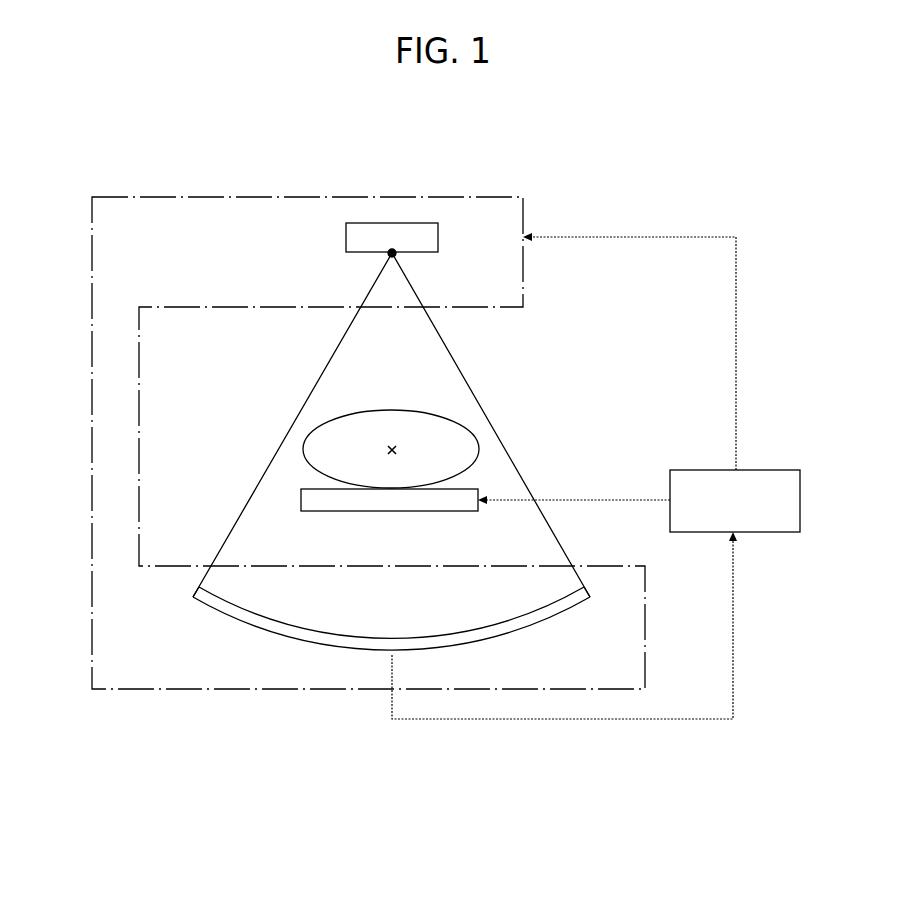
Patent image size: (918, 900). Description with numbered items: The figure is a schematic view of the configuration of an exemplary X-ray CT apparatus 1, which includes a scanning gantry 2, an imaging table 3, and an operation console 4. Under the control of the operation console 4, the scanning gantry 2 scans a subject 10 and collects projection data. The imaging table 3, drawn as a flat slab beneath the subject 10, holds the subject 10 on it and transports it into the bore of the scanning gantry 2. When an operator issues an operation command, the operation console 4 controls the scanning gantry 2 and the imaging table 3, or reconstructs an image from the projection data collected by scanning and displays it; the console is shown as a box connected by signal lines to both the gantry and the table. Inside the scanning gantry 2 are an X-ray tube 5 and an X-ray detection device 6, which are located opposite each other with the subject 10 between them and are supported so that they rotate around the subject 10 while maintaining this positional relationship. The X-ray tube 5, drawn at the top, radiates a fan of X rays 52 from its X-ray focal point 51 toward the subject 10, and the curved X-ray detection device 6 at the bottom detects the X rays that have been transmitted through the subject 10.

The X-ray CT apparatus 1 is at (519, 797).
The scanning gantry 2 is at (243, 197).
The imaging table 3 is at (441, 511).
The operation console 4 is at (772, 470).
The X-ray tube 5 is at (395, 223).
The X-ray detection device 6 is at (550, 623).
The subject 10 is at (389, 409).
The X-ray focal point 51 is at (398, 256).
The X rays 52 is at (460, 362).